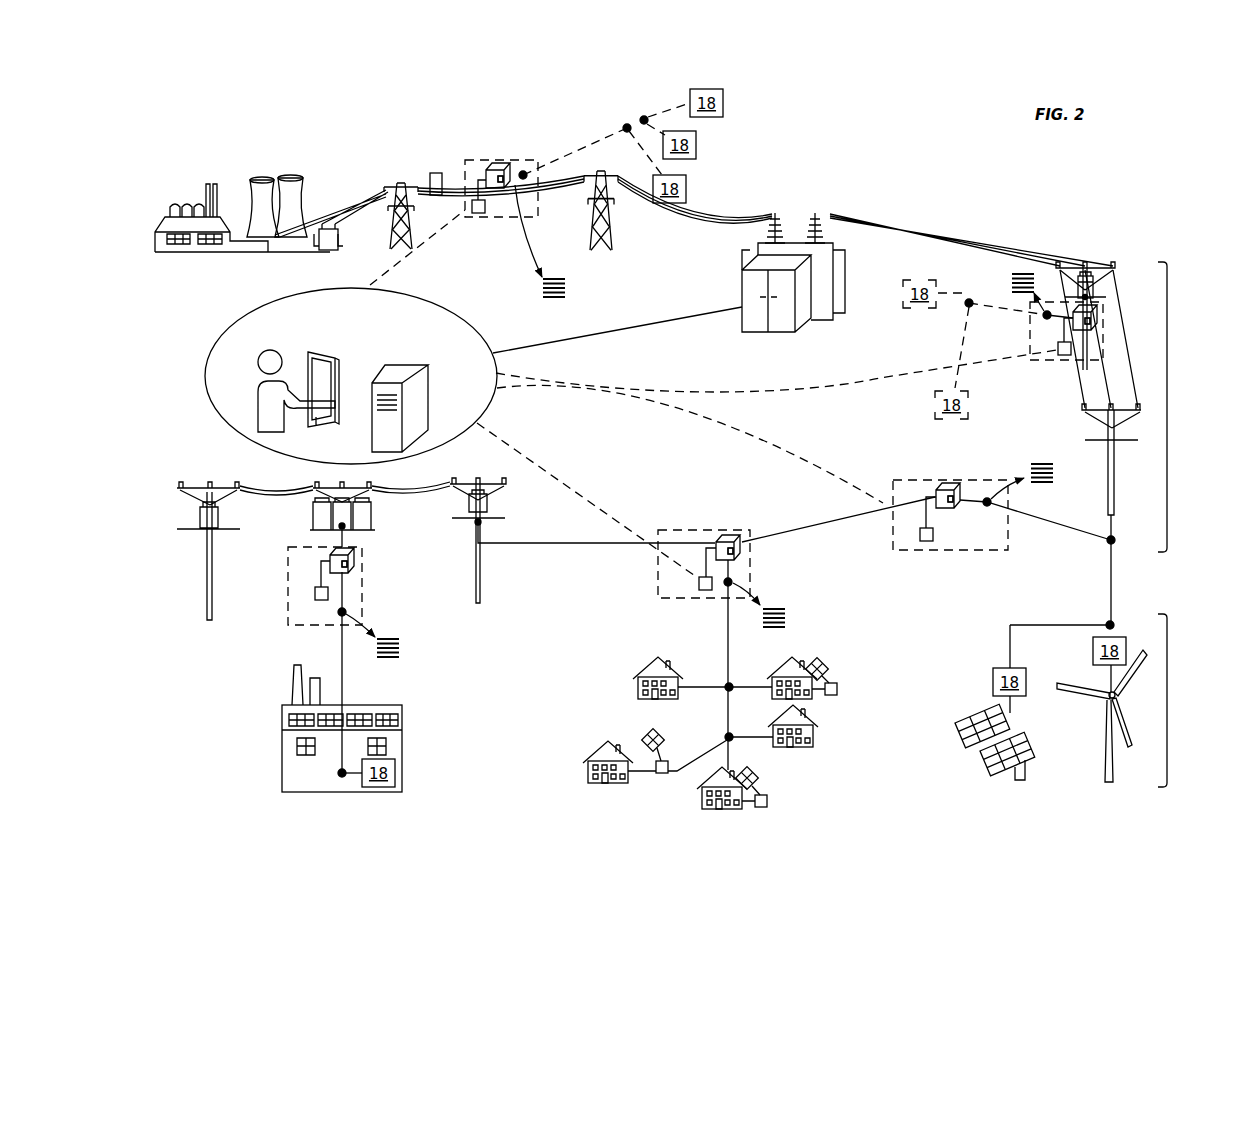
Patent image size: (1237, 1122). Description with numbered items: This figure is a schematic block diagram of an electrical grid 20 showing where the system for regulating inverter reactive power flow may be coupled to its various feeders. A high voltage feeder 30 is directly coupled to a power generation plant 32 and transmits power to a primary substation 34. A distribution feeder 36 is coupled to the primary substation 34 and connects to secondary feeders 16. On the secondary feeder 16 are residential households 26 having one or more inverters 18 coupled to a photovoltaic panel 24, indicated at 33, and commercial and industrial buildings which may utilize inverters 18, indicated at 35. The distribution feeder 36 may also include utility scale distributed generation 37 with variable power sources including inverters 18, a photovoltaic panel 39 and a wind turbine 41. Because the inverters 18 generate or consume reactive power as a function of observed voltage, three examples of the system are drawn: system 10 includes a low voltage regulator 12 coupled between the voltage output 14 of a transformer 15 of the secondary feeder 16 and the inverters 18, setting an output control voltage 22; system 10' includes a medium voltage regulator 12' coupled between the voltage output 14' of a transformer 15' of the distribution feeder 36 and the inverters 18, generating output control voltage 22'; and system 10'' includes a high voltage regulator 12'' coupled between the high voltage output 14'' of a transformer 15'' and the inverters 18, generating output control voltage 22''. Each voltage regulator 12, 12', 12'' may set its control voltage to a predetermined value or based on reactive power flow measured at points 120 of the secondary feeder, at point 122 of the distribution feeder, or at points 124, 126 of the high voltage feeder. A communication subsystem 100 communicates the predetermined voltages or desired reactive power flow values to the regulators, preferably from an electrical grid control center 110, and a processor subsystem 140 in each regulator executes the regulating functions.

The electrical grid 20 is at (794, 113).
The power generation plant 32 is at (230, 147).
The high voltage feeder 30 is at (385, 155).
The primary substation 34 is at (803, 215).
The distribution feeder 36 is at (1185, 478).
The commercial and industrial buildings 35 is at (290, 826).
The residential households with photovoltaic panels 33 is at (675, 845).
The utility scale distributed generation 37 is at (1033, 828).
The electrical grid control center 110 is at (631, 394).
The system 10 is at (699, 604).
The system 10' is at (1089, 326).
The system 10'' is at (546, 186).
The voltage regulator 12 is at (602, 516).
The voltage regulator 12' is at (1111, 308).
The voltage regulator 12'' is at (473, 146).
The voltage output 14 is at (490, 537).
The voltage output 14' is at (1107, 433).
The high voltage output 14'' is at (426, 155).
The transformer 15 is at (363, 549).
The transformer 15' is at (1060, 255).
The transformer 15'' is at (401, 230).
The secondary feeder 16 is at (335, 662).
The inverters 18 is at (831, 695).
The output control voltage 22 is at (715, 541).
The output control voltage 22' is at (988, 270).
The output control voltage 22'' is at (585, 276).
The photovoltaic panel 24 is at (827, 665).
The household 26 is at (643, 678).
The photovoltaic panel 39 is at (985, 763).
The wind turbine 41 is at (1097, 706).
The communication subsystem 100 is at (315, 593).
The points 120 is at (340, 773).
The point 122 is at (967, 307).
The point 124 is at (626, 126).
The point 126 is at (647, 120).
The processor subsystem 140 is at (356, 566).